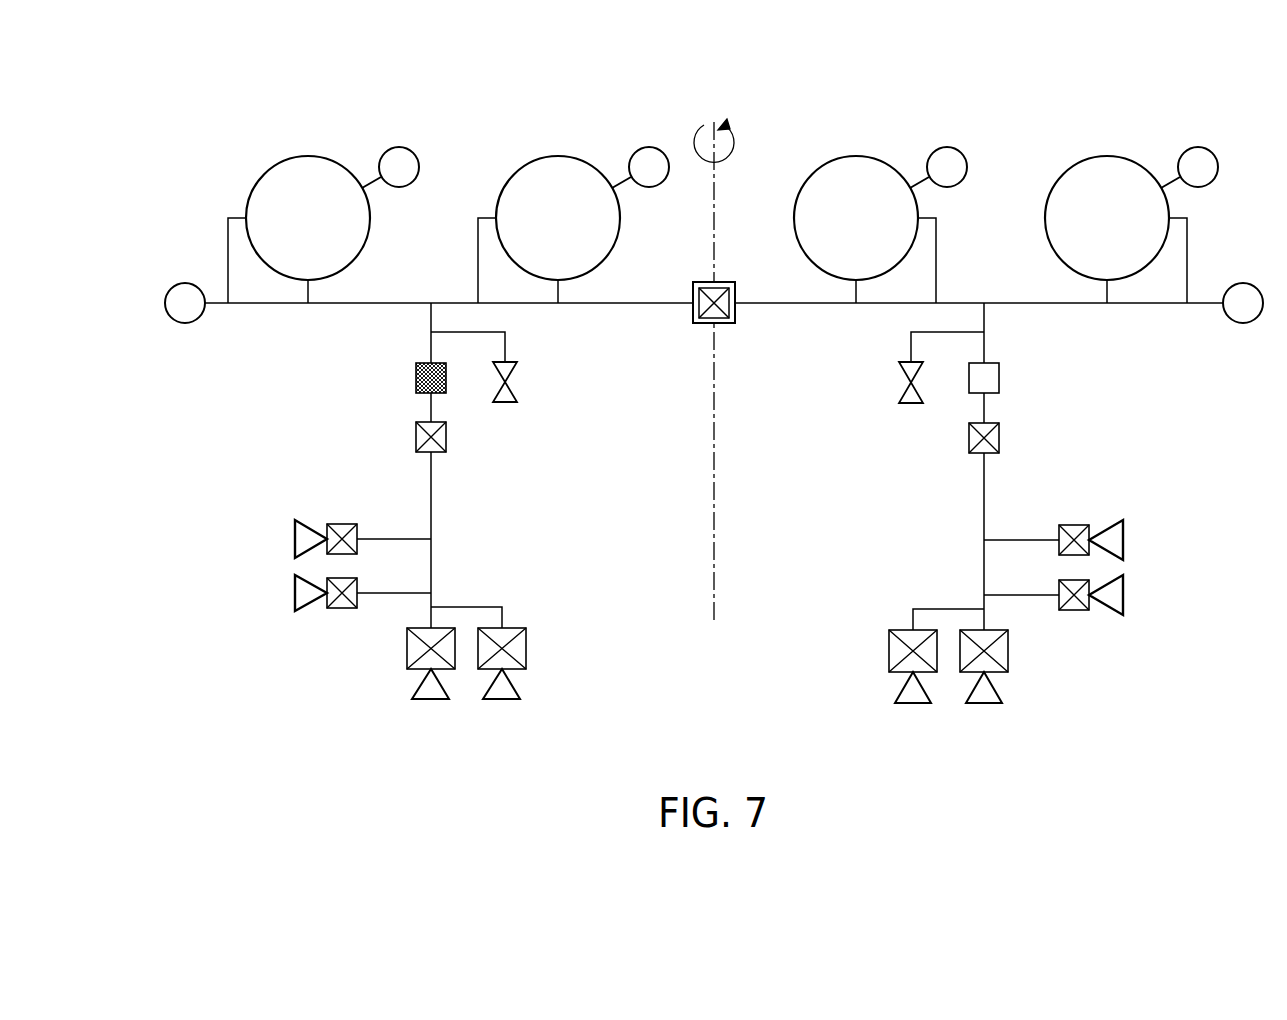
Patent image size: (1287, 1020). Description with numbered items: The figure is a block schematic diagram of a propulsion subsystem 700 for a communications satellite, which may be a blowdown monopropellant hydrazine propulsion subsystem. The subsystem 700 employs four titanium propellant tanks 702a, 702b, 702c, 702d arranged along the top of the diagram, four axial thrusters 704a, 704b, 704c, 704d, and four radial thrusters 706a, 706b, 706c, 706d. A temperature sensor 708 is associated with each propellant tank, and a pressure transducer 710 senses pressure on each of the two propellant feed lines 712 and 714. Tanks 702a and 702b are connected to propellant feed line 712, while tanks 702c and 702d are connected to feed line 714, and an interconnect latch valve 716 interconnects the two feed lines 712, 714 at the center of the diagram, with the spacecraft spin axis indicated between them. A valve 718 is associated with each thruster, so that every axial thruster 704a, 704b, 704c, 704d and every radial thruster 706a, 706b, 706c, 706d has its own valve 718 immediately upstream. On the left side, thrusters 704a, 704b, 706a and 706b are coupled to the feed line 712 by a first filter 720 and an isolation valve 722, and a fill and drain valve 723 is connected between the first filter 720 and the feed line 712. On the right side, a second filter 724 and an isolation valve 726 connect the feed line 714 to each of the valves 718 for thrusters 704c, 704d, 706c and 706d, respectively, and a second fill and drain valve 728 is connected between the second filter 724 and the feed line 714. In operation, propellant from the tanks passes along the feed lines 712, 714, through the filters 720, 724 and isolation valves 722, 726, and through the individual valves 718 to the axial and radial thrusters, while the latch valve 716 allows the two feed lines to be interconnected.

The propulsion subsystem 700 is at (793, 327).
The propellant tank 702a is at (297, 155).
The propellant tank 702b is at (547, 155).
The propellant tank 702c is at (867, 153).
The propellant tank 702d is at (1097, 153).
The axial thruster 704a is at (412, 693).
The axial thruster 704b is at (520, 695).
The axial thruster 704c is at (897, 698).
The axial thruster 704d is at (1002, 700).
The radial thruster 706a is at (295, 520).
The radial thruster 706b is at (295, 613).
The radial thruster 706c is at (1123, 518).
The radial thruster 706d is at (1123, 612).
The temperature sensor 708 is at (397, 146).
The pressure transducer 710 is at (190, 283).
The propellant feed line 712 is at (327, 305).
The propellant feed line 714 is at (1090, 306).
The interconnect latch valve 716 is at (698, 325).
The valve 718 is at (343, 523).
The first filter 720 is at (416, 363).
The isolation valve 722 is at (447, 445).
The fill and drain valve 723 is at (517, 372).
The second filter 724 is at (1000, 363).
The isolation valve 726 is at (969, 450).
The second fill and drain valve 728 is at (899, 377).